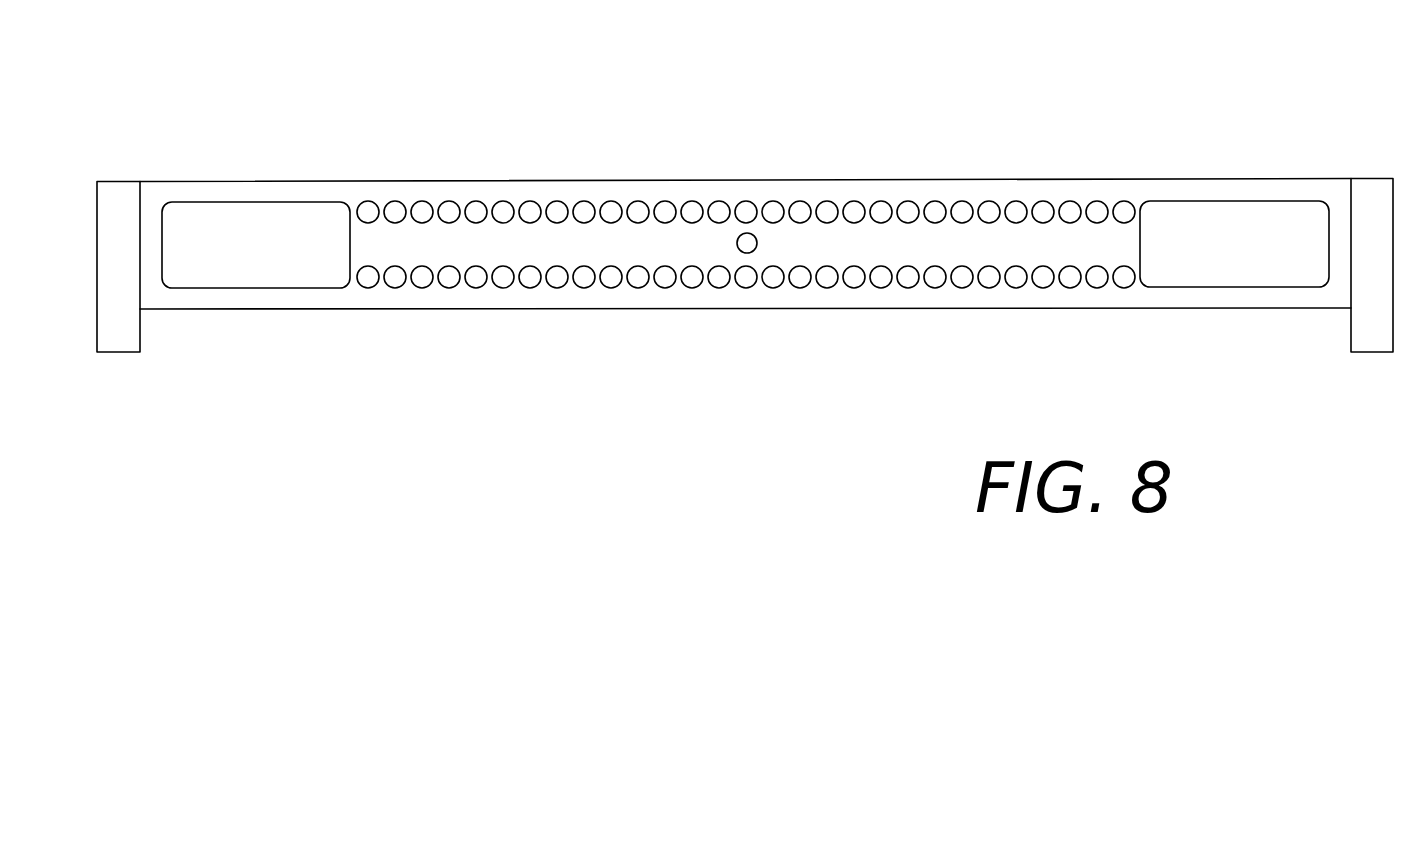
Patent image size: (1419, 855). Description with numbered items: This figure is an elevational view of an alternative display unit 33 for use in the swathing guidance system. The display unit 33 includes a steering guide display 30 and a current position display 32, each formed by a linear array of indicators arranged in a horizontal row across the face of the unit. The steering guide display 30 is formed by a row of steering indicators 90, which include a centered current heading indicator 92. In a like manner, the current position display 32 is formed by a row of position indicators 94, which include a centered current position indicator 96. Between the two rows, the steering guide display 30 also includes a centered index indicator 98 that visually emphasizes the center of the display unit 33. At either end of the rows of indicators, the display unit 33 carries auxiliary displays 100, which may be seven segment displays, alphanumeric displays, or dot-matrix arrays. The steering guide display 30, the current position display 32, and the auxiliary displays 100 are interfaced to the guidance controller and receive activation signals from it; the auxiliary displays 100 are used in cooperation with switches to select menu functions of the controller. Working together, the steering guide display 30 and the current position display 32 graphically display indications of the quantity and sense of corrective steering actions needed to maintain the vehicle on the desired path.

The display unit 33 is at (325, 72).
The steering guide display 30 is at (746, 171).
The current position display 32 is at (746, 315).
The steering indicators 90 is at (908, 212).
The current heading indicator 92 is at (747, 212).
The position indicators 94 is at (963, 277).
The current position indicator 96 is at (747, 277).
The index indicator 98 is at (747, 243).
The auxiliary displays 100 is at (293, 277).